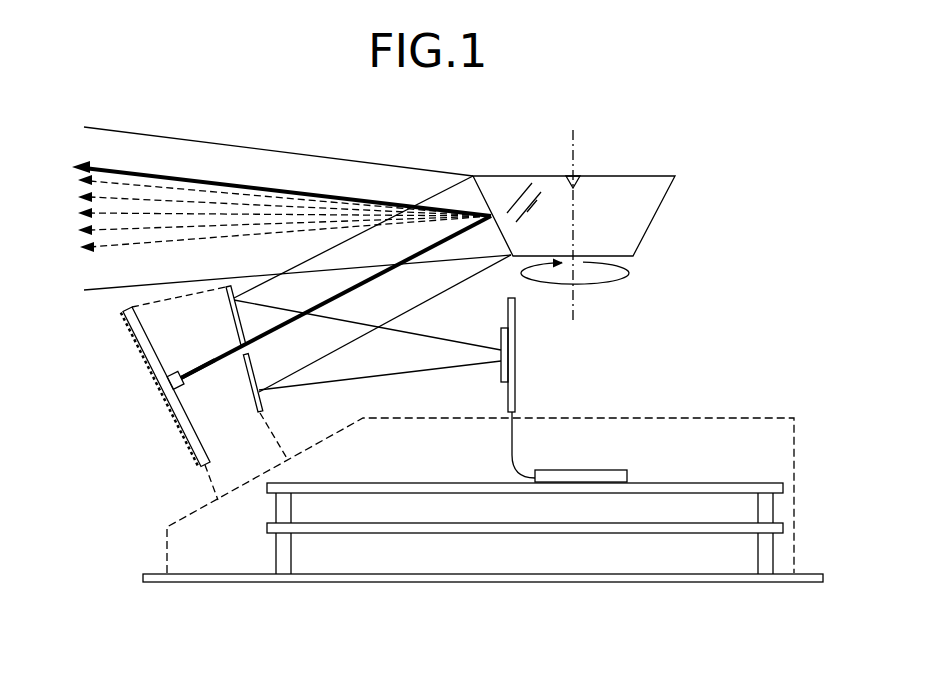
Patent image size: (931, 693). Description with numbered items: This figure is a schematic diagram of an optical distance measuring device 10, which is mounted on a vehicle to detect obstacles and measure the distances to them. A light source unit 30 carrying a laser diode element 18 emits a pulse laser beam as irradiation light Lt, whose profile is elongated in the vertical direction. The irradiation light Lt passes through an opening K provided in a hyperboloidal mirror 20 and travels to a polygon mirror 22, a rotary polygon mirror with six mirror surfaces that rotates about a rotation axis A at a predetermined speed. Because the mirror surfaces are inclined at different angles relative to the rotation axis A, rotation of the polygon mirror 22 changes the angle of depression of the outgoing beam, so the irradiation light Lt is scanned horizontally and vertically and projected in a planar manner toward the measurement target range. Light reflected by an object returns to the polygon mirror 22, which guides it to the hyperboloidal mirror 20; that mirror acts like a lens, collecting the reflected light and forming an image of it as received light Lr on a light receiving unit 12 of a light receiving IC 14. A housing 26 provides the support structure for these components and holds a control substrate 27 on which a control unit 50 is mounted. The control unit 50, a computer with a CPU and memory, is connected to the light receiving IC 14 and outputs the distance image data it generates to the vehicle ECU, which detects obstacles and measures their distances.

The optical distance measuring device 10 is at (770, 152).
The polygon mirror 22 is at (657, 217).
The hyperboloidal mirror 20 is at (226, 316).
The laser diode element 18 is at (178, 392).
The light receiving IC 14 is at (515, 358).
The light receiving unit 12 is at (497, 357).
The housing 26 is at (738, 419).
The control substrate 27 is at (722, 483).
The control unit 50 is at (622, 470).
The light source unit 30 is at (130, 424).
The opening K is at (245, 349).
The irradiation light Lt is at (210, 360).
The received light Lr is at (397, 377).
The rotation axis A is at (572, 213).